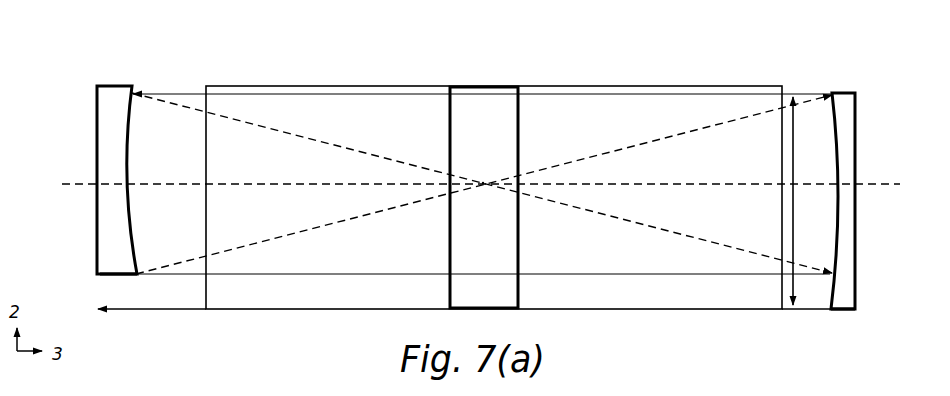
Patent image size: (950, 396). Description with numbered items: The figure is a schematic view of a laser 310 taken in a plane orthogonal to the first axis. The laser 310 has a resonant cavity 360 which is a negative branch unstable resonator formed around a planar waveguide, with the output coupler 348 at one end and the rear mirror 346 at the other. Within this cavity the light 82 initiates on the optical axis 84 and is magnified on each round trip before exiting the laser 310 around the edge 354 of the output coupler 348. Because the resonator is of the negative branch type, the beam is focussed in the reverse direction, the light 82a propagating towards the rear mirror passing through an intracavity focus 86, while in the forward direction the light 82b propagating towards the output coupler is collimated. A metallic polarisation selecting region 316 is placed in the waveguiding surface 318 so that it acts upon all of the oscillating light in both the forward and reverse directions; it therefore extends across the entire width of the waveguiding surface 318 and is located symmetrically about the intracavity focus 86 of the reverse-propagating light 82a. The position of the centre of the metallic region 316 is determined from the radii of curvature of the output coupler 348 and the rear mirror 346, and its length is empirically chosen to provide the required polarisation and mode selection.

The laser 310 is at (738, 84).
The waveguiding surface 318 is at (408, 135).
The metallic polarisation selecting region 316 is at (478, 85).
The output coupler 348 is at (103, 223).
The edge of the output coupler 354 is at (108, 276).
The resonant cavity 360 is at (856, 155).
The rear mirror 346 is at (848, 312).
The optical axis 84 is at (78, 183).
The light propagating in the reverse direction 82a is at (677, 131).
The light propagating in the forward direction 82b is at (670, 276).
The light 82 is at (118, 312).
The intracavity focus 86 is at (484, 183).